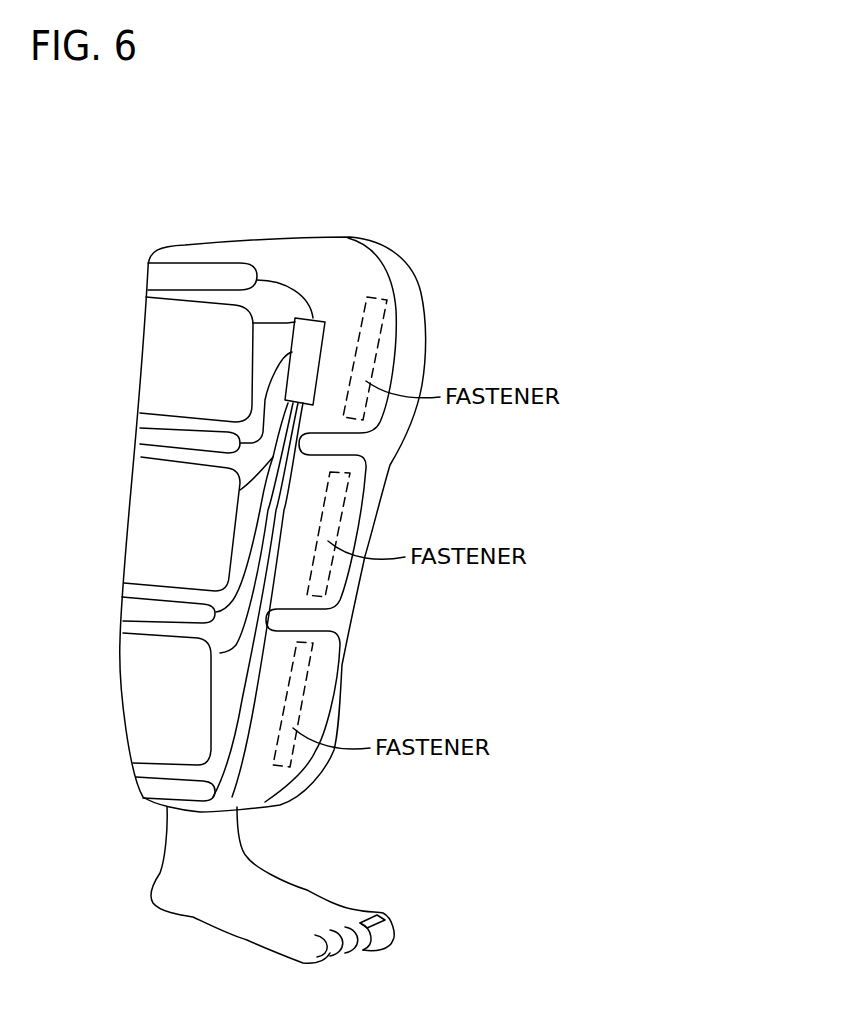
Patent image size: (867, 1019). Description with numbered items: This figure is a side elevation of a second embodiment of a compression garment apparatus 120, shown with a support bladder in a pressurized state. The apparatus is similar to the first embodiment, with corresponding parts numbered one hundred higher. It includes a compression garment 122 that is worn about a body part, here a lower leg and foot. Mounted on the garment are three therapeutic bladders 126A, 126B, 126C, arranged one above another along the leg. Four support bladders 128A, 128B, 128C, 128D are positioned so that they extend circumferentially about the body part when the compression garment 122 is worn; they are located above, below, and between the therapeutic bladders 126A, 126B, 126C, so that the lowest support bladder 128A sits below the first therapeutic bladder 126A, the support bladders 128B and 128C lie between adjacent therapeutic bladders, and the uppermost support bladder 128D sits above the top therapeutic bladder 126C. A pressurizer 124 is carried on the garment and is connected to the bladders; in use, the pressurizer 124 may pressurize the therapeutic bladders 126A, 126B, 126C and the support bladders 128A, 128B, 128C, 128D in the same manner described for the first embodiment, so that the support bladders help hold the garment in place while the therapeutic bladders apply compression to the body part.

The compression garment apparatus 120 is at (647, 240).
The compression garment 122 is at (396, 453).
The pressurizer 124 is at (327, 338).
The therapeutic bladder 126A is at (143, 677).
The therapeutic bladder 126B is at (157, 510).
The therapeutic bladder 126C is at (167, 327).
The support bladder 128A is at (140, 786).
The support bladder 128B is at (135, 610).
The support bladder 128C is at (143, 443).
The support bladder 128D is at (180, 273).